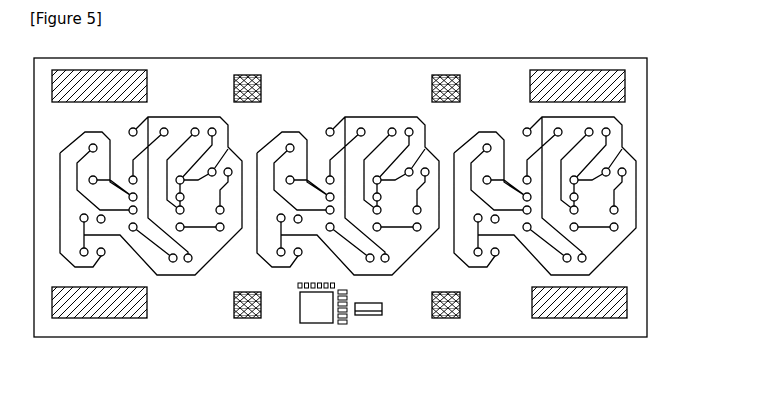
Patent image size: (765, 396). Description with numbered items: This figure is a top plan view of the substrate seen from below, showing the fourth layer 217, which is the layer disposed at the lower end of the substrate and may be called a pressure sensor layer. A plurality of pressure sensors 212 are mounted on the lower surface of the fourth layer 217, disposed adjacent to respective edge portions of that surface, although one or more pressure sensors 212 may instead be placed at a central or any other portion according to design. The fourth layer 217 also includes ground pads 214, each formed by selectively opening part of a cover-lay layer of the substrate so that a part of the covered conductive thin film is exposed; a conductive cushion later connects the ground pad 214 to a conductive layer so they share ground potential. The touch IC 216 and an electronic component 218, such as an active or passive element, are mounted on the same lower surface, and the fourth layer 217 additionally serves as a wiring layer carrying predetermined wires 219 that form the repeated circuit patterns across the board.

The pressure sensor 212 is at (558, 314).
The ground pad 214 is at (452, 318).
The touch IC 216 is at (318, 319).
The fourth layer 217 is at (648, 130).
The electronic component 218 is at (367, 316).
The wires 219 is at (637, 185).